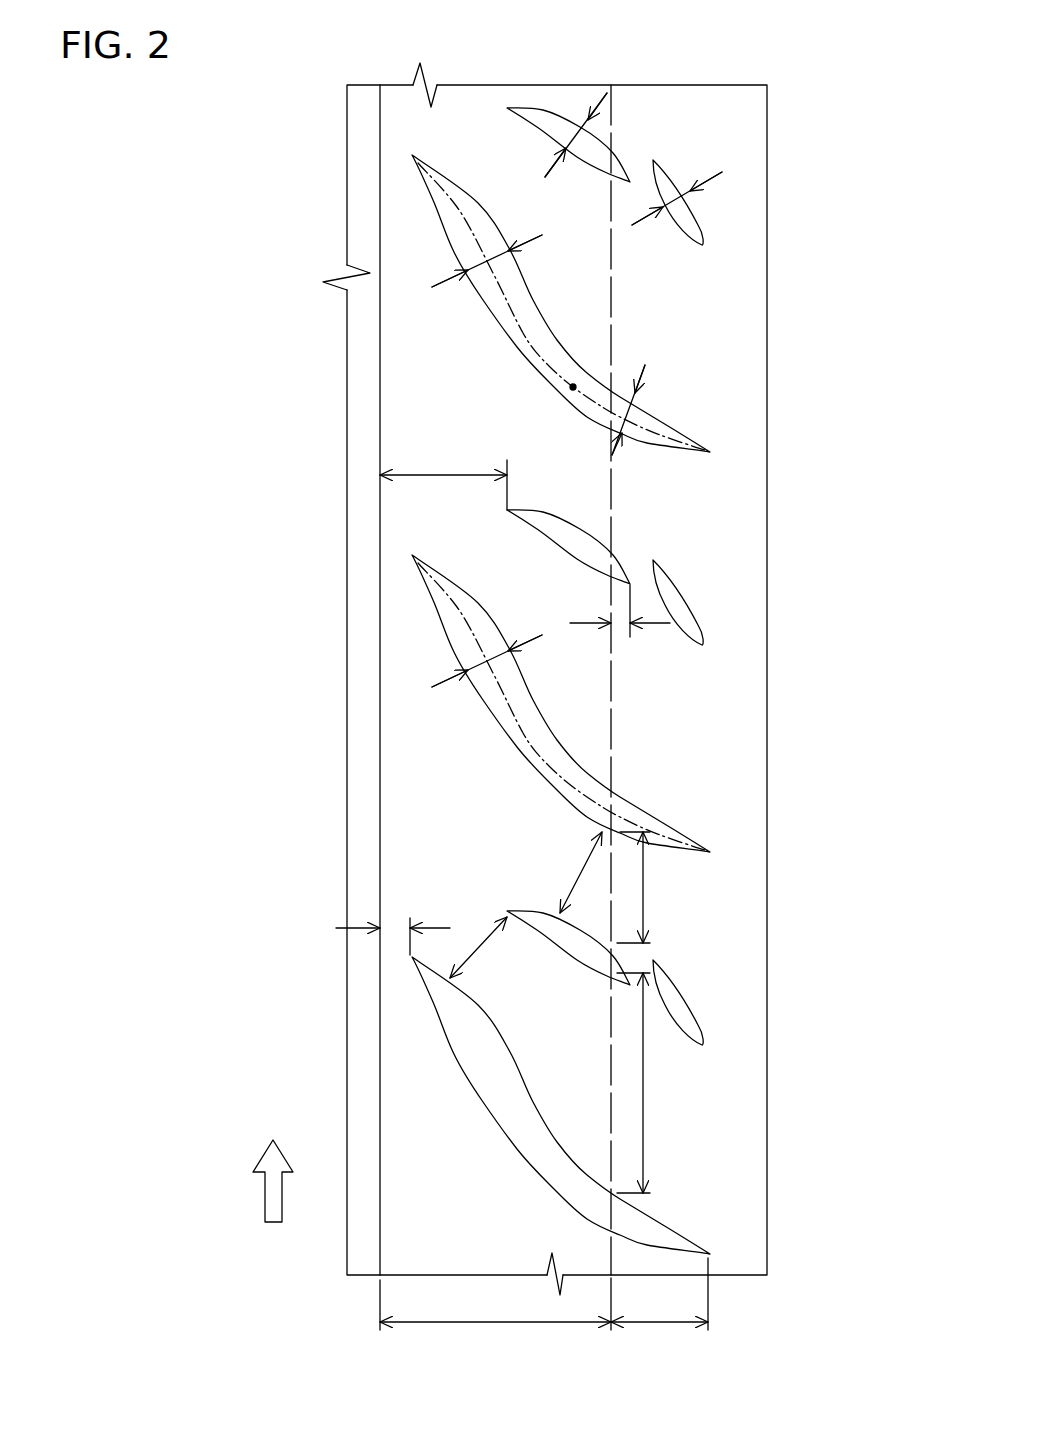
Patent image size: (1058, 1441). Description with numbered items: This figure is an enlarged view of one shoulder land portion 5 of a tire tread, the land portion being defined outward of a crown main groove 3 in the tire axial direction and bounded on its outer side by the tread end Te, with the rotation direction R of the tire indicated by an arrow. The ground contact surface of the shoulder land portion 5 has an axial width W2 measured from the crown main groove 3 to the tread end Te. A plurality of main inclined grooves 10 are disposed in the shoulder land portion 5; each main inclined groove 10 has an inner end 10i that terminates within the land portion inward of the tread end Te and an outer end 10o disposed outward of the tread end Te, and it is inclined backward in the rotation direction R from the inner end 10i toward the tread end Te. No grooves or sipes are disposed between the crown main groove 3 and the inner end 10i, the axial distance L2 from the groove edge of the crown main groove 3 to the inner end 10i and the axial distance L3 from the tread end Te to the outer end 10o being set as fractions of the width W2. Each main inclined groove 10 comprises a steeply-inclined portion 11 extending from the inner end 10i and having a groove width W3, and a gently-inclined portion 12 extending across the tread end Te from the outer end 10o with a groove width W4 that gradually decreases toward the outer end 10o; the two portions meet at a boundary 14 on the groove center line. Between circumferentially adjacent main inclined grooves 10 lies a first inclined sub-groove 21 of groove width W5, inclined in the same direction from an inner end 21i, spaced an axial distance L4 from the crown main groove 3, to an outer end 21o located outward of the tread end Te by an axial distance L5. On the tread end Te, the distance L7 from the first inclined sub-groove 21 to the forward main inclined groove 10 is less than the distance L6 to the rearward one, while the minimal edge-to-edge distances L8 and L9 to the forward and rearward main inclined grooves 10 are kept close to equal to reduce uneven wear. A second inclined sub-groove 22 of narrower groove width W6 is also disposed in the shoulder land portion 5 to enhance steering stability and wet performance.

The crown main groove 3 is at (364, 115).
The shoulder land portion 5 is at (468, 125).
The tread end Te is at (614, 108).
The main inclined groove 10 is at (528, 343).
The steeply-inclined portion 11 is at (442, 615).
The gently-inclined portion 12 is at (643, 811).
The boundary 14 is at (575, 386).
The inner end 10i is at (412, 155).
The outer end 10o is at (710, 452).
The first inclined sub-groove 21 is at (608, 143).
The inner end 21i is at (507, 510).
The outer end 21o is at (631, 584).
The second inclined sub-groove 22 is at (690, 218).
The width of ground contact surface of shoulder land portion W2 is at (495, 1318).
The groove width of steeply-inclined portion W3 is at (470, 268).
The groove width of gently-inclined portion W4 is at (665, 415).
The groove width of first inclined sub-groove W5 is at (578, 128).
The groove width of second inclined sub-groove W6 is at (677, 200).
The distance from crown main groove edge to inner end L2 is at (392, 928).
The distance from tread end to outer end L3 is at (659, 1308).
The distance from crown main groove edge to inner end of first inclined sub-groove L4 is at (480, 475).
The distance from outer end of first inclined sub-groove to tread end L5 is at (622, 625).
The distance to rearward main inclined groove on tread end L6 is at (645, 1085).
The distance to forward main inclined groove on tread end L7 is at (645, 888).
The minimal distance to forward main inclined groove L8 is at (582, 872).
The minimal distance to rearward main inclined groove L9 is at (480, 947).
The rotation direction R is at (273, 1165).